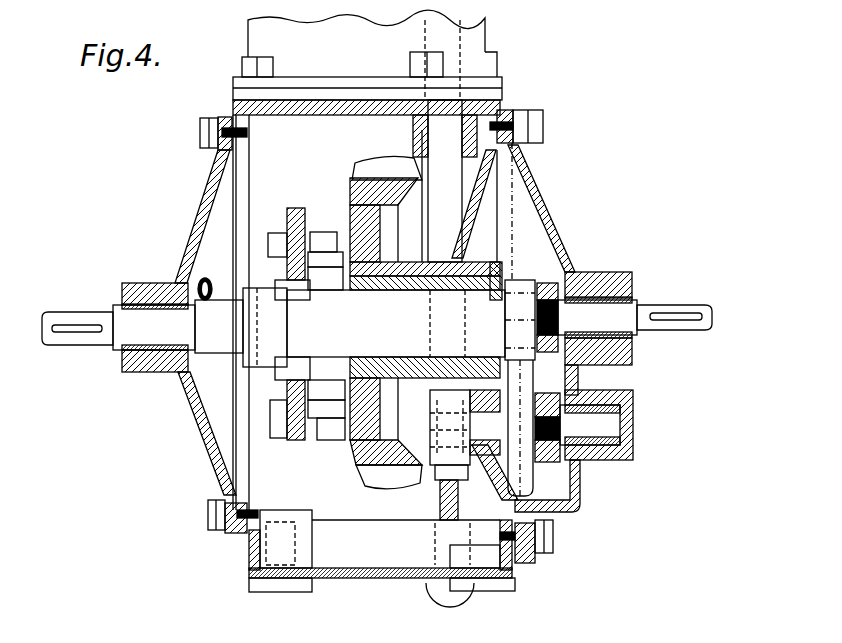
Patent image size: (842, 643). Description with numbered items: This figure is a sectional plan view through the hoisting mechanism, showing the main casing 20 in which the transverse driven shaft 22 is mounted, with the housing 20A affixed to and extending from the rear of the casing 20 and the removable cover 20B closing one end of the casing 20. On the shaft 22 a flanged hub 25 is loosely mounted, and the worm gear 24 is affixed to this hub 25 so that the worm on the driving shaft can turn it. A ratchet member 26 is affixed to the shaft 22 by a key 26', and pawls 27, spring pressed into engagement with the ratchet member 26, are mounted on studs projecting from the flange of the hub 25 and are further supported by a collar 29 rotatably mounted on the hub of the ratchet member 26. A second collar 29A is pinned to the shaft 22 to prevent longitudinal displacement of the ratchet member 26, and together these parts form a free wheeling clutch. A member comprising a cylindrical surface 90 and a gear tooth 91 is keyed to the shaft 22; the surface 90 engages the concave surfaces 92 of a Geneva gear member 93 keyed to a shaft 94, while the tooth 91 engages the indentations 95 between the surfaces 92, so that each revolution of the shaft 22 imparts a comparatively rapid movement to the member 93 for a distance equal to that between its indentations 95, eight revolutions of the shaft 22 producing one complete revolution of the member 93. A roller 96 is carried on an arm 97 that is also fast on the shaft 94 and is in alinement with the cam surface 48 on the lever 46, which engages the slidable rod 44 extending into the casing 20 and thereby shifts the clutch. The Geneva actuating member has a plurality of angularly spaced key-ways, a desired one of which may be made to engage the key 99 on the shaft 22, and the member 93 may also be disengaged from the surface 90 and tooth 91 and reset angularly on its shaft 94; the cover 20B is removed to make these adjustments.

The main casing 20 is at (214, 201).
The housing 20A is at (254, 42).
The cover 20B is at (553, 232).
The transverse driven shaft 22 is at (125, 313).
The worm gear 24 is at (355, 465).
The flanged hub 25 is at (350, 210).
The ratchet member 26 is at (499, 323).
The key 26' is at (219, 326).
The pawls 27 is at (323, 231).
The collar 29 is at (291, 210).
The collar 29A is at (250, 370).
The slidable rod 44 is at (428, 149).
The lever 46 is at (449, 526).
The cam surface 48 is at (440, 490).
The cylindrical surface 90 is at (526, 280).
The gear tooth 91 is at (553, 336).
The concave surfaces 92 is at (563, 514).
The Geneva gear member 93 is at (555, 488).
The shaft 94 is at (600, 425).
The indentations 95 is at (545, 468).
The roller 96 is at (432, 476).
The arm 97 is at (455, 420).
The key 99 is at (503, 326).